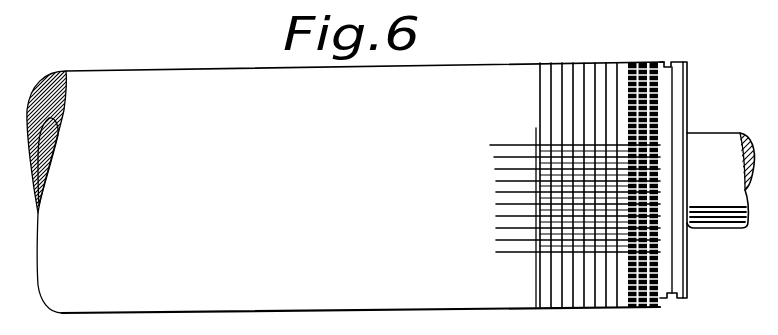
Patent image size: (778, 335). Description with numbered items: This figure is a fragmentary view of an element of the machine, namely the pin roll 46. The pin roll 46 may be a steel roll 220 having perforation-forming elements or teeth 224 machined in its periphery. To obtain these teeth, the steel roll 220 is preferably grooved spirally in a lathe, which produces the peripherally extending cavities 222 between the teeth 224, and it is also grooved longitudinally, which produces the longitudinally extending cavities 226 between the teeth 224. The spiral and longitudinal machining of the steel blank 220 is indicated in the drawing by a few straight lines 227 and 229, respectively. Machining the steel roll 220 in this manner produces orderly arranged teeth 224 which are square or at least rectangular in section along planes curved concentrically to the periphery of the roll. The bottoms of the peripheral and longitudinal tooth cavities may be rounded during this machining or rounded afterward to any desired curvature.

The pin roll 46 is at (246, 62).
The steel roll 220 is at (472, 57).
The peripherally extending cavities 222 is at (658, 307).
The teeth 224 is at (648, 238).
The longitudinally extending cavities 226 is at (660, 197).
The straight lines indicating spiral machining 227 is at (545, 104).
The straight lines indicating longitudinal machining 229 is at (496, 204).